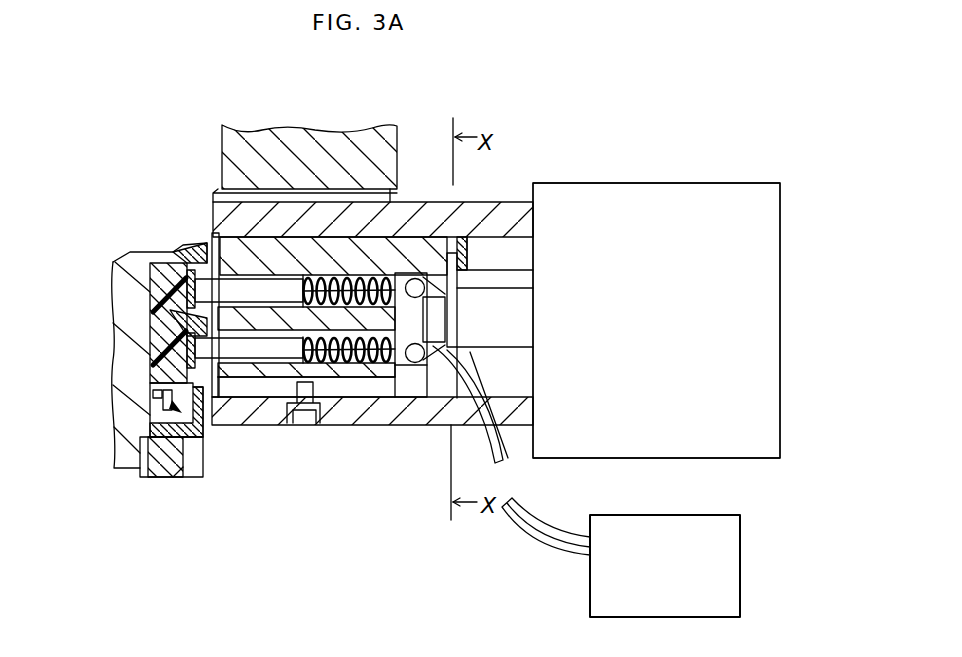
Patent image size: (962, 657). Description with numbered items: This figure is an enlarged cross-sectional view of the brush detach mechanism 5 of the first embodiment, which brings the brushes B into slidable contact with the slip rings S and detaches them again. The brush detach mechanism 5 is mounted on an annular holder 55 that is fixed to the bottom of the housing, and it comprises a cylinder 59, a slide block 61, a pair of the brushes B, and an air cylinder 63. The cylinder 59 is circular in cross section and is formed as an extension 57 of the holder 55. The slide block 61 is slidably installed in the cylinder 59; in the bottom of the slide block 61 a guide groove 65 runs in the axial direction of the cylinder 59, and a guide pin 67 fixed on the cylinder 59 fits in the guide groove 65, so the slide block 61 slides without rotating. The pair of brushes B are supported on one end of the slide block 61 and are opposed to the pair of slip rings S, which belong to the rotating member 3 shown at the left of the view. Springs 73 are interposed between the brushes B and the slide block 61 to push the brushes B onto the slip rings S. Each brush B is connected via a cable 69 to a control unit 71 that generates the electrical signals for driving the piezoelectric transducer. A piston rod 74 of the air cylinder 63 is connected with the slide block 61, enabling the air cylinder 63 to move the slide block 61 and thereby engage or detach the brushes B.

The rotary member 3 is at (137, 348).
The brush detach mechanism 5 is at (620, 183).
The slip rings S is at (180, 244).
The brushes B is at (150, 300).
The annular holder 55 is at (210, 218).
The extension 57 is at (480, 212).
The cylinder 59 is at (415, 380).
The slide block 61 is at (247, 363).
The air cylinder 63 is at (737, 260).
The guide groove 65 is at (258, 385).
The guide pin 67 is at (291, 388).
The cable 69 is at (557, 533).
The control unit 71 is at (740, 587).
The springs 73 is at (333, 357).
The piston rod 74 is at (497, 327).